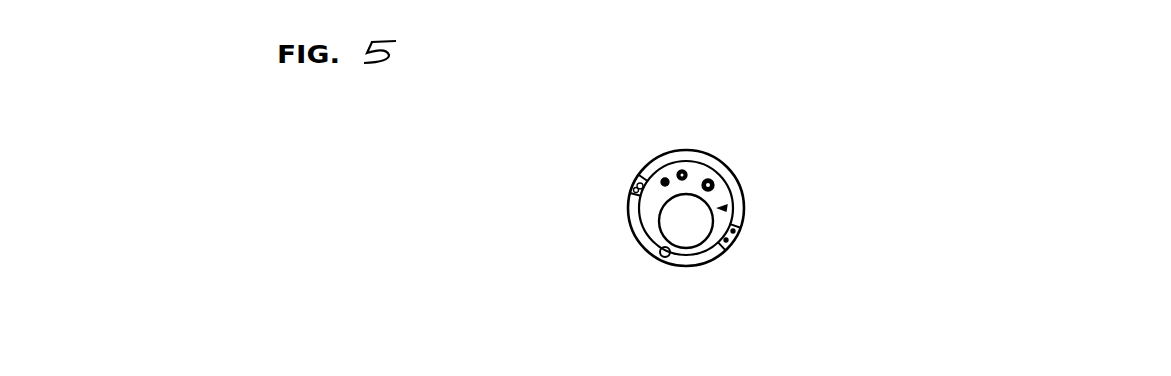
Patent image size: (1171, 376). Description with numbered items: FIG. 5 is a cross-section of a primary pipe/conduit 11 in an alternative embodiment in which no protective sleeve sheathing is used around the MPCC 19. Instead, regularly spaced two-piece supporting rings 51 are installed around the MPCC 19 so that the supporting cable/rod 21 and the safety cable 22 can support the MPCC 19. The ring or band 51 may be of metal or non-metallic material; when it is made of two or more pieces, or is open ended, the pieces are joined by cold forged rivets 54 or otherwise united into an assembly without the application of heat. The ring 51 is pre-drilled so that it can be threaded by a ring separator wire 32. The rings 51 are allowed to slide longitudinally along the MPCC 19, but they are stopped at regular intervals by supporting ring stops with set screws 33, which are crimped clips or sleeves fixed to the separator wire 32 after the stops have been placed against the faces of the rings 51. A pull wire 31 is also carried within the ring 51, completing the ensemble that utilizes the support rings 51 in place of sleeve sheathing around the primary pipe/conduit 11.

The primary pipe/conduit 11 is at (629, 200).
The MPCC 19 is at (722, 208).
The supporting cable/rod 21 is at (686, 173).
The safety cable 22 is at (713, 186).
The pull wire 31 is at (662, 179).
The ring separator wire 32 is at (660, 256).
The supporting ring stops with set screws 33 is at (519, 286).
The two-piece supporting ring 51 is at (693, 272).
The cold forged rivets 54 is at (737, 237).